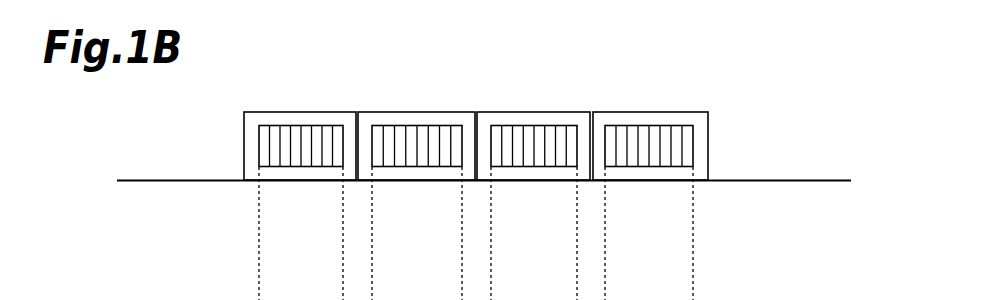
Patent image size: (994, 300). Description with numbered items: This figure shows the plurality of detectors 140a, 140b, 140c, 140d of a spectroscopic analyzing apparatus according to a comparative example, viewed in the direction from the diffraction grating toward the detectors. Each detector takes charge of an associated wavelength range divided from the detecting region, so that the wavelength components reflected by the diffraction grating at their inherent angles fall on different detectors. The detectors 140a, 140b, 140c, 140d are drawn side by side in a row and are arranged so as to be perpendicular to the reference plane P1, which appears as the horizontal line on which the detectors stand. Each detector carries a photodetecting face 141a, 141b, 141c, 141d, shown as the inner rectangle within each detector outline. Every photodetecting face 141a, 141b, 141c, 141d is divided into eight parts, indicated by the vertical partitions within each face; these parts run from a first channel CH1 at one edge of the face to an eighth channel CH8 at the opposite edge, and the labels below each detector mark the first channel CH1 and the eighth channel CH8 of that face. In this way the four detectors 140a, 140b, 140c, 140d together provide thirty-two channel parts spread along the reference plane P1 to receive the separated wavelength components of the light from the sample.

The detector 140a is at (278, 112).
The detector 140b is at (392, 112).
The detector 140c is at (510, 112).
The detector 140d is at (625, 112).
The photodetecting face 141a is at (320, 127).
The photodetecting face 141b is at (437, 127).
The photodetecting face 141c is at (555, 127).
The photodetecting face 141d is at (670, 127).
The first channel CH1 is at (262, 166).
The eighth channel CH8 is at (338, 167).
The reference plane P1 is at (509, 180).